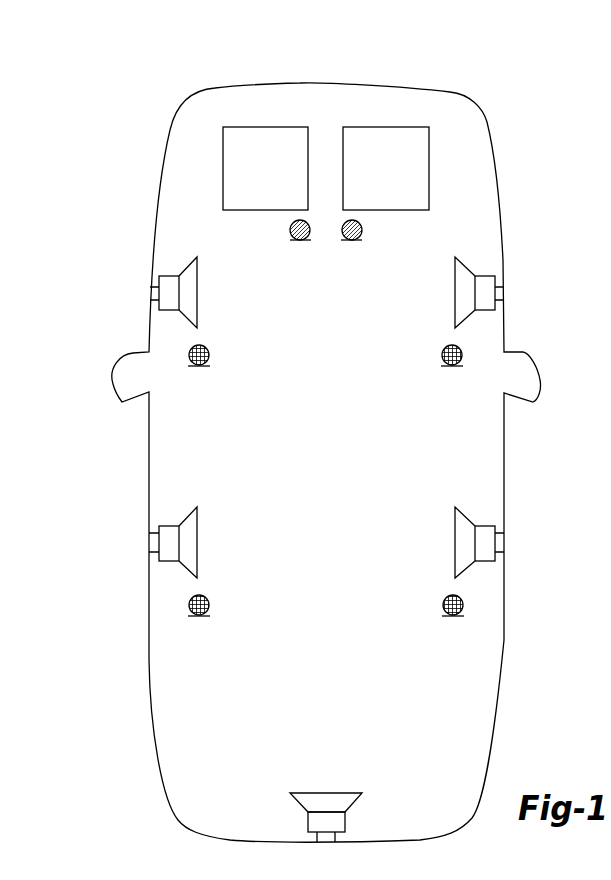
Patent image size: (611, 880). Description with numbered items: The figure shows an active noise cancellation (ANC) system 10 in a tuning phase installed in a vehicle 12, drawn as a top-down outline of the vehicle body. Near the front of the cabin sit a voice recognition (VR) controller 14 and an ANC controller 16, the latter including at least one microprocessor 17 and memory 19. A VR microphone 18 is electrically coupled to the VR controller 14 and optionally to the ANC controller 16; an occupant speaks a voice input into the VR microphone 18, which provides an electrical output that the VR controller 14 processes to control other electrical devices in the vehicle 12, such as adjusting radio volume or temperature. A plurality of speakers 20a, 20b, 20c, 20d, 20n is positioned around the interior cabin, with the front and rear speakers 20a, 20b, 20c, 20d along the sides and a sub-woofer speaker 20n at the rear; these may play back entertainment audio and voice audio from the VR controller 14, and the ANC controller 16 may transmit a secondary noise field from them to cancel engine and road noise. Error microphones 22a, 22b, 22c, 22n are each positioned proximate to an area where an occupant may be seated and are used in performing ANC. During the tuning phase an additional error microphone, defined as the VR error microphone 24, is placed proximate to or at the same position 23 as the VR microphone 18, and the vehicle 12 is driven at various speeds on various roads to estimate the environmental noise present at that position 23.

The active noise cancellation (ANC) system 10 is at (486, 84).
The vehicle 12 is at (168, 133).
The voice recognition (VR) controller 14 is at (223, 156).
The active noise cancellation (ANC) controller 16 is at (429, 157).
The microprocessor 17 is at (374, 204).
The memory 19 is at (416, 204).
The VR microphone 18 is at (302, 241).
The position of the VR microphone 23 is at (339, 277).
The VR error microphone (VREM) 24 is at (350, 241).
The speaker 20a is at (197, 292).
The speaker 20b is at (455, 292).
The speaker 20c is at (197, 543).
The speaker 20d is at (455, 543).
The speaker 20n is at (330, 793).
The error microphone 22a is at (210, 353).
The error microphone 22b is at (442, 353).
The error microphone 22c is at (210, 603).
The error microphone 22n is at (443, 603).